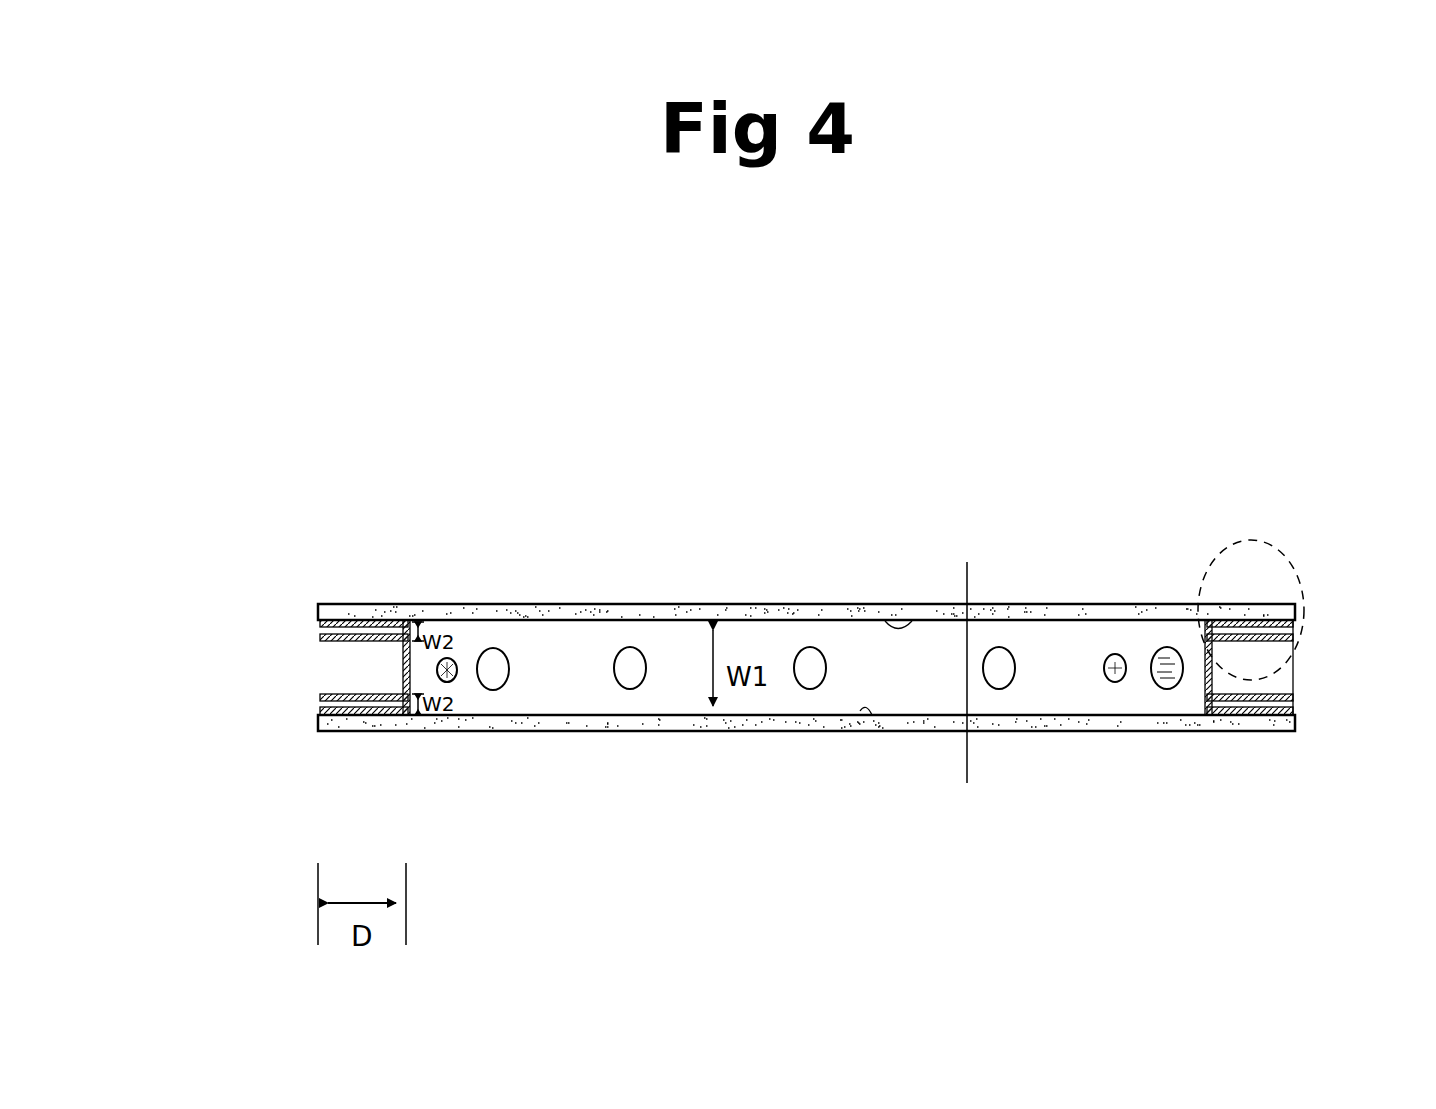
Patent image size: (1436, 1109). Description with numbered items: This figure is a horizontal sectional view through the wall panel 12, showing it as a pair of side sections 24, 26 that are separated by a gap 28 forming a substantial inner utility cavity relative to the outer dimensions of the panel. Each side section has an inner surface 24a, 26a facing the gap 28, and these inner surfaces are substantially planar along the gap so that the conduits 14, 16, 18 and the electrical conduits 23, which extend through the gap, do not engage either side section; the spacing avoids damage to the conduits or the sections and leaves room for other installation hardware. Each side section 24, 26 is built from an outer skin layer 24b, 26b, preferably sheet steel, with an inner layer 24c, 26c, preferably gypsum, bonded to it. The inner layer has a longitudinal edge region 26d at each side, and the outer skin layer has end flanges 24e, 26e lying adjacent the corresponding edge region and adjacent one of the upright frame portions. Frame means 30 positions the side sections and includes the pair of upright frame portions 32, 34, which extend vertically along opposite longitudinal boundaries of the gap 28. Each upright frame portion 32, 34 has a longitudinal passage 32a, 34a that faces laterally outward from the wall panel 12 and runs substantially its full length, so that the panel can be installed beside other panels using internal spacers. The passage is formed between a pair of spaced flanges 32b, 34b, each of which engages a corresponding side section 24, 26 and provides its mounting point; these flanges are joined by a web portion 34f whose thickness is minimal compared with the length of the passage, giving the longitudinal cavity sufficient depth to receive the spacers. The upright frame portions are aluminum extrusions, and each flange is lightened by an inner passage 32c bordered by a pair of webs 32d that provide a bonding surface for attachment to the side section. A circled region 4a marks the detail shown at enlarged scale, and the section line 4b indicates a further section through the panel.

The wall panel 12 is at (835, 400).
The conduit 14 is at (449, 660).
The conduit 16 is at (1111, 655).
The conduit 18 is at (1163, 650).
The electrical conduit 23 is at (497, 670).
The side section 24 is at (618, 596).
The inner surface 24a is at (881, 620).
The outer skin layer 24b is at (653, 604).
The inner layer 24c is at (710, 617).
The end flange 24e is at (312, 608).
The side section 26 is at (620, 740).
The inner surface 26a is at (872, 731).
The outer skin layer 26b is at (680, 731).
The inner layer 26c is at (770, 731).
The longitudinal edge region 26d is at (1297, 731).
The end flange 26e is at (318, 732).
The gap 28 is at (538, 650).
The frame means 30 is at (343, 668).
The upright frame portion 32 is at (323, 639).
The longitudinal passage 32a is at (330, 690).
The spaced flange 32b is at (322, 693).
The inner passage 32c is at (367, 632).
The web 32d is at (337, 622).
The upright frame portion 34 is at (1320, 665).
The longitudinal passage 34a is at (1263, 663).
The spaced flange 34b is at (1291, 694).
The web portion 34f is at (1232, 712).
The detail region 4a is at (1228, 543).
The section line 4b is at (988, 783).